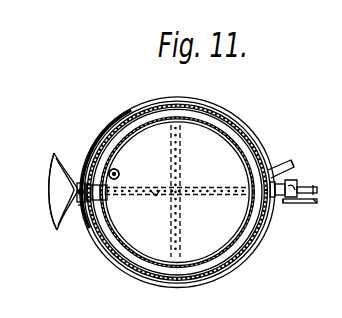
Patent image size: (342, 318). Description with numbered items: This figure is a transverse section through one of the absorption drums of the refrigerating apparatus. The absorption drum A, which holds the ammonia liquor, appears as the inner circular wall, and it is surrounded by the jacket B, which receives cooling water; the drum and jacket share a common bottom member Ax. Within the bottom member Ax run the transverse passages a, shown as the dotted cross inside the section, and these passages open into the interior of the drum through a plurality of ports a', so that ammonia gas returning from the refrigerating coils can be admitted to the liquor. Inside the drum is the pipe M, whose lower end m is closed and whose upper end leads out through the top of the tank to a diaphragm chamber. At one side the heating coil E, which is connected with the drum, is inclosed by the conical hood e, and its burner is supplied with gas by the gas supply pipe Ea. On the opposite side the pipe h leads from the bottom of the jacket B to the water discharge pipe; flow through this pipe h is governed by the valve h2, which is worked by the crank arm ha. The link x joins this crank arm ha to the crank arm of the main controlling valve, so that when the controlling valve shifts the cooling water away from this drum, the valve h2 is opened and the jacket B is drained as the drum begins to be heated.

The bottom member Ax is at (140, 104).
The jacket B is at (196, 100).
The absorption drum A is at (205, 117).
The transverse passages a is at (175, 191).
The ports a' is at (155, 208).
The pipe M is at (117, 171).
The lower end of pipe m is at (121, 175).
The heating coil E is at (80, 190).
The conical hood e is at (44, 169).
The gas supply pipe Ea is at (283, 170).
The pipe h is at (307, 189).
The valve h2 is at (287, 201).
The crank arm ha is at (299, 205).
The link x is at (314, 204).